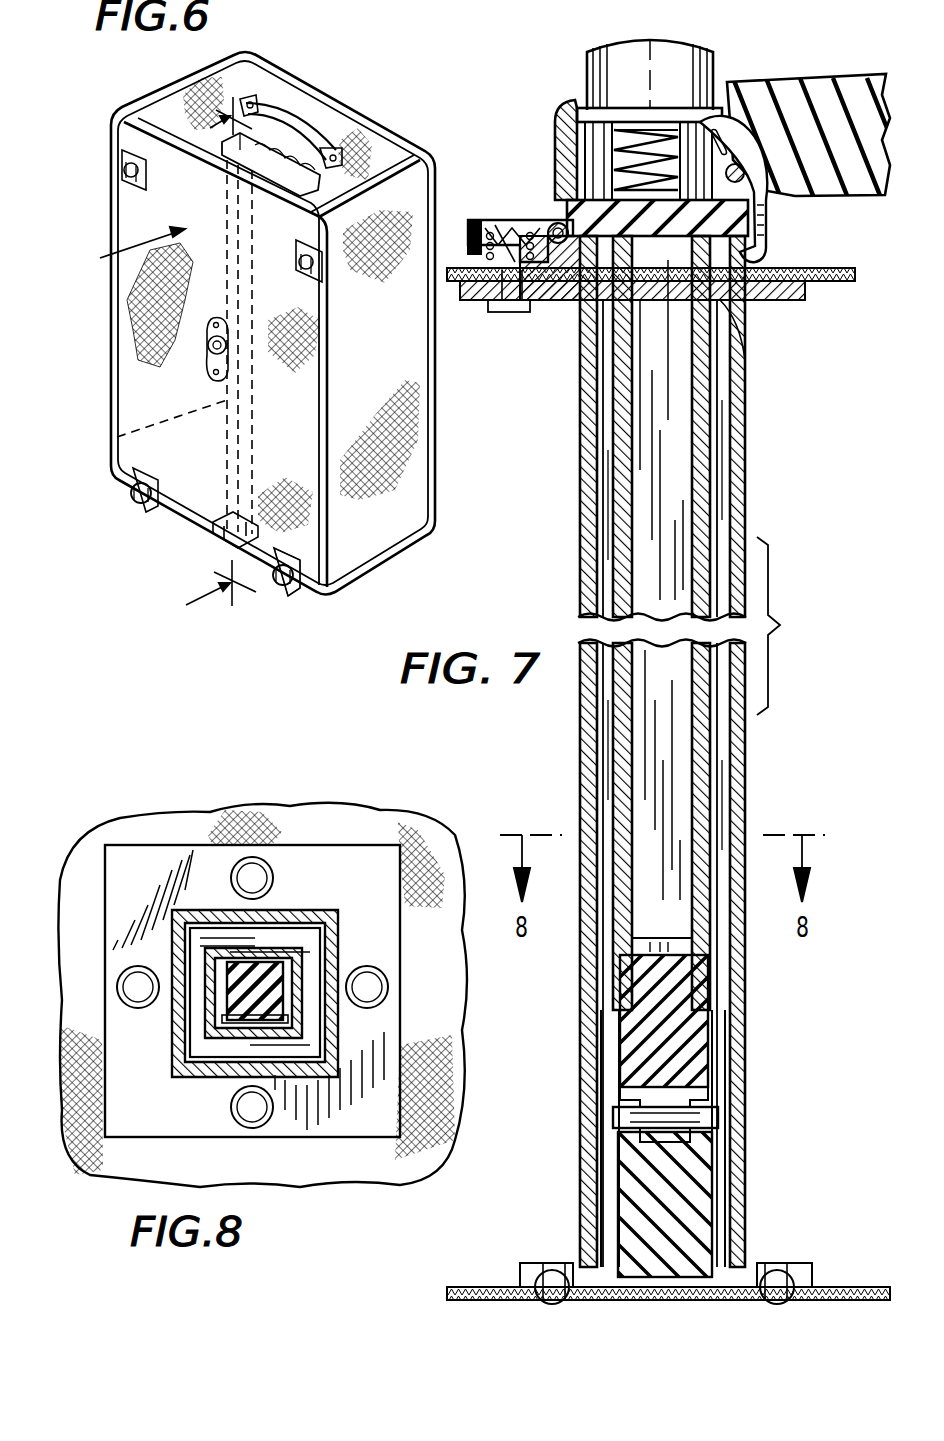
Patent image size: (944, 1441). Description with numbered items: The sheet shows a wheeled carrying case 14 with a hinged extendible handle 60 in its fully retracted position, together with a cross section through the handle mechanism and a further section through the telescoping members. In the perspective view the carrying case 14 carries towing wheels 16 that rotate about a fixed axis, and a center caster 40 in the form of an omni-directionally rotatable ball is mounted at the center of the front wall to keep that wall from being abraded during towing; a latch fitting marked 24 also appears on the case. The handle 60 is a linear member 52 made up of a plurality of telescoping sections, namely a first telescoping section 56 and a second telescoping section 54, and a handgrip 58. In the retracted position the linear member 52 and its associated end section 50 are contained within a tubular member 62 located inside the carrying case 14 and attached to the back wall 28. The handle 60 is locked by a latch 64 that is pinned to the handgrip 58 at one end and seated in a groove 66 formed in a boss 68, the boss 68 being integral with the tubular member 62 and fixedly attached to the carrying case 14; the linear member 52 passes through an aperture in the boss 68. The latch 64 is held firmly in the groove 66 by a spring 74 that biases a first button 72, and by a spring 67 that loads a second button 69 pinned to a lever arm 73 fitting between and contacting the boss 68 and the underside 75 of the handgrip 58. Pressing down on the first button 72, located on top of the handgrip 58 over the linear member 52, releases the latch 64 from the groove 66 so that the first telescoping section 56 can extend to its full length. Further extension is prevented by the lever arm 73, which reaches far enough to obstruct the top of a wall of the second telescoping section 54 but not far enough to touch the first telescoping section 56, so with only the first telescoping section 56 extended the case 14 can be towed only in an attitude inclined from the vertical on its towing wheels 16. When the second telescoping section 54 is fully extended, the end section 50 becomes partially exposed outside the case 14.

In FIG. 6, the carrying case 14 is at (424, 410).
In FIG. 6, the towing wheels 16 is at (285, 588).
In FIG. 6, the latch 24 is at (328, 245).
In FIG. 6, the back wall 28 is at (128, 335).
In FIG. 6, the center caster 40 is at (208, 328).
In FIG. 7, the end section 50 is at (717, 1200).
In FIG. 7, the linear member 52 is at (717, 466).
In FIG. 7, the second telescoping section 54 is at (614, 547).
In FIG. 8, the second telescoping section 54 is at (173, 1038).
In FIG. 7, the first telescoping section 56 is at (656, 590).
In FIG. 8, the first telescoping section 56 is at (270, 968).
In FIG. 6, the handgrip 58 is at (300, 160).
In FIG. 7, the handgrip 58 is at (805, 80).
In FIG. 6, the handle 60 is at (126, 252).
In FIG. 6, the tubular member 62 is at (112, 438).
In FIG. 7, the tubular member 62 is at (747, 798).
In FIG. 8, the tubular member 62 is at (340, 957).
In FIG. 7, the latch 64 is at (768, 230).
In FIG. 7, the groove 66 is at (733, 356).
In FIG. 7, the spring 67 is at (472, 218).
In FIG. 7, the boss 68 is at (780, 300).
In FIG. 7, the second button 69 is at (494, 218).
In FIG. 7, the first button 72 is at (692, 42).
In FIG. 7, the lever arm 73 is at (566, 302).
In FIG. 7, the spring 74 is at (722, 118).
In FIG. 7, the underside 75 is at (555, 225).